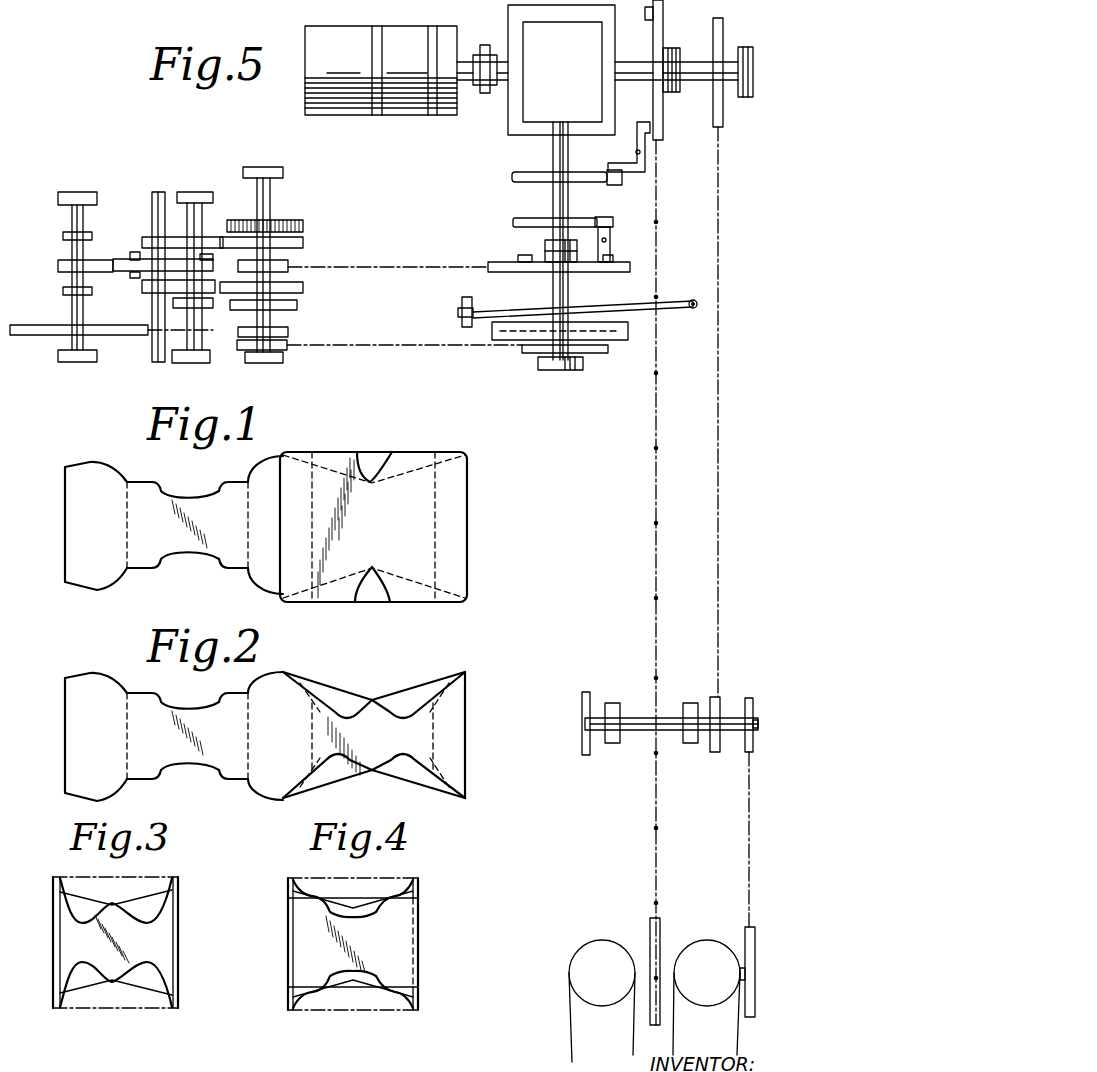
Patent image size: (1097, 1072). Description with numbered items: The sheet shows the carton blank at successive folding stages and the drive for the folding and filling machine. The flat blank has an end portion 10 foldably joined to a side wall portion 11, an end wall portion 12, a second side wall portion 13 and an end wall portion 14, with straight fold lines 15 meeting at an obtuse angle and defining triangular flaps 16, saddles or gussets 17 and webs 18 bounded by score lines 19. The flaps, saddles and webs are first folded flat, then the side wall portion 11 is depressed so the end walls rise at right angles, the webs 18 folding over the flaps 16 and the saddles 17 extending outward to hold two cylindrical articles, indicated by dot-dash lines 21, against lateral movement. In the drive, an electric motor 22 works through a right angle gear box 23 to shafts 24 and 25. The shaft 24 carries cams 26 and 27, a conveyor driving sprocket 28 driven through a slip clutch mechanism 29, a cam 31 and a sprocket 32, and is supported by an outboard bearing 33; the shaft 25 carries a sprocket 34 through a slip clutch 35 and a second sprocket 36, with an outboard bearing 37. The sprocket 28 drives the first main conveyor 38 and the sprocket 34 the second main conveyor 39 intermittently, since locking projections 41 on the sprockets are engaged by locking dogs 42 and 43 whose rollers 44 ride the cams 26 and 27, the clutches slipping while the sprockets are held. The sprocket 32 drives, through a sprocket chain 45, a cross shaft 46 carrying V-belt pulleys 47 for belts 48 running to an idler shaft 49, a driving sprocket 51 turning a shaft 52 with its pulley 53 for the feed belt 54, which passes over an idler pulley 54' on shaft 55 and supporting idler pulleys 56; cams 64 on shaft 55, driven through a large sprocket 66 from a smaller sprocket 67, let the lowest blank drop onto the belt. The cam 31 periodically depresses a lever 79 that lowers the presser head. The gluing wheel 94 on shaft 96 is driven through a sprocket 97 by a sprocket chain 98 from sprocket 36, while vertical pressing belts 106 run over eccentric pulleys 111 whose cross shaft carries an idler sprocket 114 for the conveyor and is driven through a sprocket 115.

In FIG. 1, the end portion 10 is at (460, 515).
In FIG. 2, the end portion 10 is at (460, 710).
In FIG. 3, the end portion 10 is at (180, 935).
In FIG. 4, the end portion 10 is at (420, 948).
In FIG. 1, the side wall portion 11 is at (417, 537).
In FIG. 2, the side wall portion 11 is at (422, 732).
In FIG. 3, the side wall portion 11 is at (167, 953).
In FIG. 1, the end wall portion 12 is at (273, 480).
In FIG. 2, the end wall portion 12 is at (260, 692).
In FIG. 4, the end wall portion 12 is at (290, 892).
In FIG. 1, the second side wall portion 13 is at (198, 507).
In FIG. 2, the second side wall portion 13 is at (185, 715).
In FIG. 4, the second side wall portion 13 is at (393, 935).
In FIG. 1, the end wall portion 14 is at (80, 525).
In FIG. 2, the end wall portion 14 is at (70, 735).
In FIG. 3, the end wall portion 14 is at (55, 943).
In FIG. 1, the fold lines 15 is at (360, 485).
In FIG. 1, the triangular flaps 16 is at (360, 454).
In FIG. 2, the triangular flaps 16 is at (390, 695).
In FIG. 3, the triangular flaps 16 is at (130, 903).
In FIG. 4, the triangular flaps 16 is at (370, 902).
In FIG. 1, the saddles or gussets 17 is at (300, 441).
In FIG. 2, the saddles or gussets 17 is at (292, 675).
In FIG. 3, the saddles or gussets 17 is at (62, 876).
In FIG. 4, the saddles or gussets 17 is at (300, 878).
In FIG. 1, the triangular webs 18 is at (312, 453).
In FIG. 2, the triangular webs 18 is at (310, 685).
In FIG. 1, the score lines 19 is at (328, 455).
In FIG. 3, the dot-dash lines 21 is at (140, 1010).
In FIG. 4, the dot-dash lines 21 is at (347, 877).
In FIG. 5, the electric motor 22 is at (358, 113).
In FIG. 5, the right angle gear box 23 is at (528, 98).
In FIG. 5, the shaft 24 is at (553, 155).
In FIG. 5, the shaft 25 is at (622, 68).
In FIG. 5, the cam 26 is at (523, 180).
In FIG. 5, the cam 27 is at (513, 223).
In FIG. 5, the conveyor driving sprocket 28 is at (490, 270).
In FIG. 5, the slip clutch mechanism 29 is at (545, 245).
In FIG. 5, the cam 31 is at (620, 337).
In FIG. 5, the sprocket 32 is at (522, 351).
In FIG. 5, the outboard bearing 33 is at (568, 370).
In FIG. 5, the sprocket 34 is at (664, 13).
In FIG. 5, the slip clutch 35 is at (673, 92).
In FIG. 5, the second sprocket 36 is at (723, 122).
In FIG. 5, the outboard bearing 37 is at (746, 97).
In FIG. 5, the first main conveyor 38 is at (358, 266).
In FIG. 5, the second main conveyor 39 is at (660, 235).
In FIG. 5, the locking projections 41 is at (647, 13).
In FIG. 5, the locking dog 42 is at (607, 233).
In FIG. 5, the locking dog 43 is at (643, 143).
In FIG. 5, the roller 44 is at (618, 186).
In FIG. 5, the sprocket chain 45 is at (375, 332).
In FIG. 5, the cross shaft 46 is at (272, 197).
In FIG. 5, the V-belt pulleys 47 is at (302, 250).
In FIG. 5, the belts 48 is at (208, 240).
In FIG. 5, the idler shaft 49 is at (152, 308).
In FIG. 5, the driving sprocket 51 is at (293, 307).
In FIG. 5, the shaft 52 is at (200, 343).
In FIG. 5, the pulley 53 is at (208, 257).
In FIG. 5, the feed belt 54 is at (156, 251).
In FIG. 5, the idler pulley 54' is at (65, 256).
In FIG. 5, the shaft 55 is at (72, 308).
In FIG. 5, the idler pulleys 56 is at (125, 257).
In FIG. 5, the cams 64 is at (65, 232).
In FIG. 5, the large sprocket 66 is at (25, 335).
In FIG. 5, the smaller sprocket 67 is at (290, 333).
In FIG. 5, the lever 79 is at (633, 308).
In FIG. 5, the gluing wheel 94 is at (582, 743).
In FIG. 5, the shaft 96 is at (632, 718).
In FIG. 5, the sprocket 97 is at (720, 703).
In FIG. 5, the sprocket chain 98 is at (720, 563).
In FIG. 5, the vertical belts 106 is at (633, 1032).
In FIG. 5, the eccentric pulleys 111 is at (587, 952).
In FIG. 5, the idler sprocket 114 is at (656, 927).
In FIG. 5, the sprocket 115 is at (752, 932).